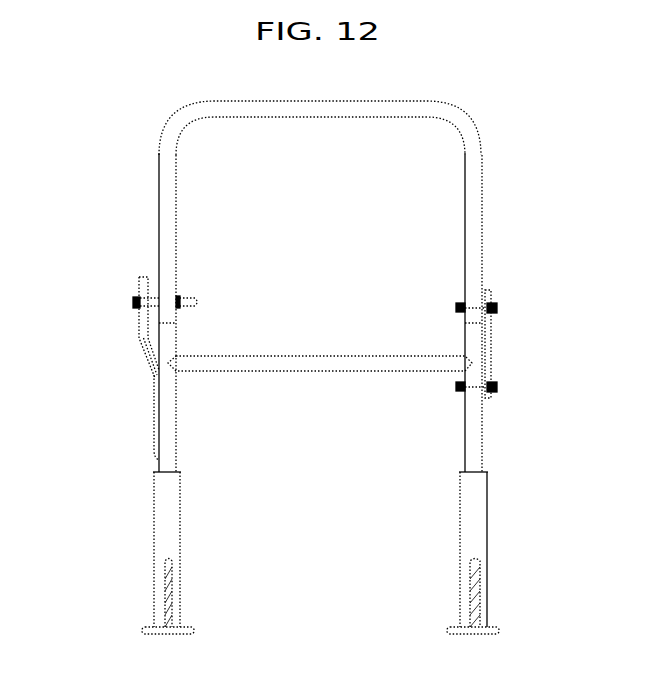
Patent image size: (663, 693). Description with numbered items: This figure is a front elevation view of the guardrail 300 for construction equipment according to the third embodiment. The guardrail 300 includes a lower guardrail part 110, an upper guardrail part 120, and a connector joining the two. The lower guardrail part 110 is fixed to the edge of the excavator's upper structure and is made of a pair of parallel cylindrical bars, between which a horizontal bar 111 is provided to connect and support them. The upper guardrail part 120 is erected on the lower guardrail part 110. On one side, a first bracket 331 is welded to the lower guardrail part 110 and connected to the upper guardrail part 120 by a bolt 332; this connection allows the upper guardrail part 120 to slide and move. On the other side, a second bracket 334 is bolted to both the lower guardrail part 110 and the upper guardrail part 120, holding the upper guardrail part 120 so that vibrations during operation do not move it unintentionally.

The guardrail for construction equipment 300 is at (132, 90).
The upper guardrail part 120 is at (474, 208).
The lower guardrail part 110 is at (475, 512).
The horizontal bar 111 is at (315, 371).
The first bracket 331 is at (152, 408).
The bolt 332 is at (133, 302).
The second bracket 334 is at (491, 348).